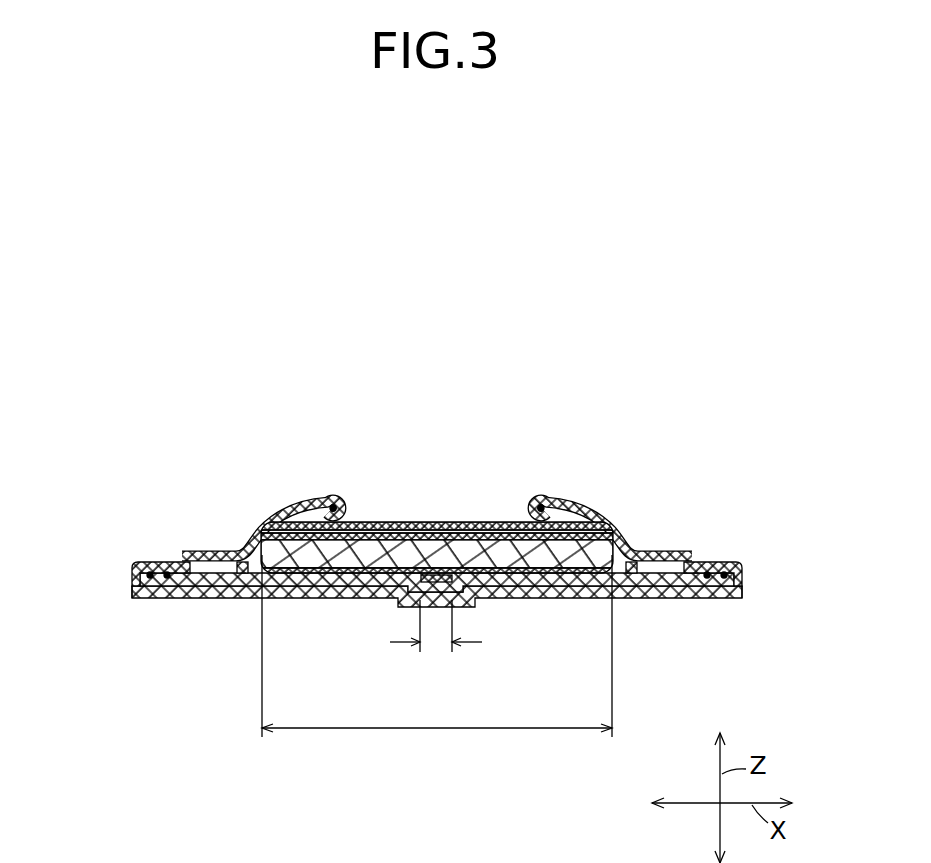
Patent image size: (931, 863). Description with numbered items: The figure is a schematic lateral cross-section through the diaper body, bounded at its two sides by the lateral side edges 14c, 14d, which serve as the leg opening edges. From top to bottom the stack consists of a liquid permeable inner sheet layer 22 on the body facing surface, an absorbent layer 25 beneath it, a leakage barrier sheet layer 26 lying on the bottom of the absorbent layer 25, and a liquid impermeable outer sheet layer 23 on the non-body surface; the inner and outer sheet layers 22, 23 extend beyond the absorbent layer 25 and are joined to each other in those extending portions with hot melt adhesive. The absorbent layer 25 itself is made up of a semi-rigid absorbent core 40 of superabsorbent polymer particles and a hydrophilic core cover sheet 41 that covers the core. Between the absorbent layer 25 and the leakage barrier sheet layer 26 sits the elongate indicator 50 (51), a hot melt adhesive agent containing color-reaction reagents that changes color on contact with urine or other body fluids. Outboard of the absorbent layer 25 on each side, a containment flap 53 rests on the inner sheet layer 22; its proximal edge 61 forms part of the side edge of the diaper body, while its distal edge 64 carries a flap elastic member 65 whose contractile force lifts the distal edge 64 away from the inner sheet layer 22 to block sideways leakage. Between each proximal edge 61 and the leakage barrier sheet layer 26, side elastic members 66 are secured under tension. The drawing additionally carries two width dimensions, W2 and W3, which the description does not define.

The lateral side edge 14c is at (132, 578).
The lateral side edge 14d is at (742, 578).
The inner sheet layer 22 is at (437, 474).
The outer sheet layer 23 is at (322, 599).
The absorbent layer 25 is at (437, 458).
The leakage barrier sheet layer 26 is at (229, 599).
The absorbent core 40 is at (463, 522).
The core cover sheet 41 is at (419, 522).
The indicator 50 is at (508, 606).
The positioning pad 51 is at (436, 578).
The containment flap 53 is at (437, 501).
The proximal edge 61 is at (155, 562).
The distal edge 64 is at (322, 494).
The flap elastic member 65 is at (336, 502).
The side elastic member 66 is at (150, 578).
The module width W2 is at (435, 730).
The pad width W3 is at (436, 645).